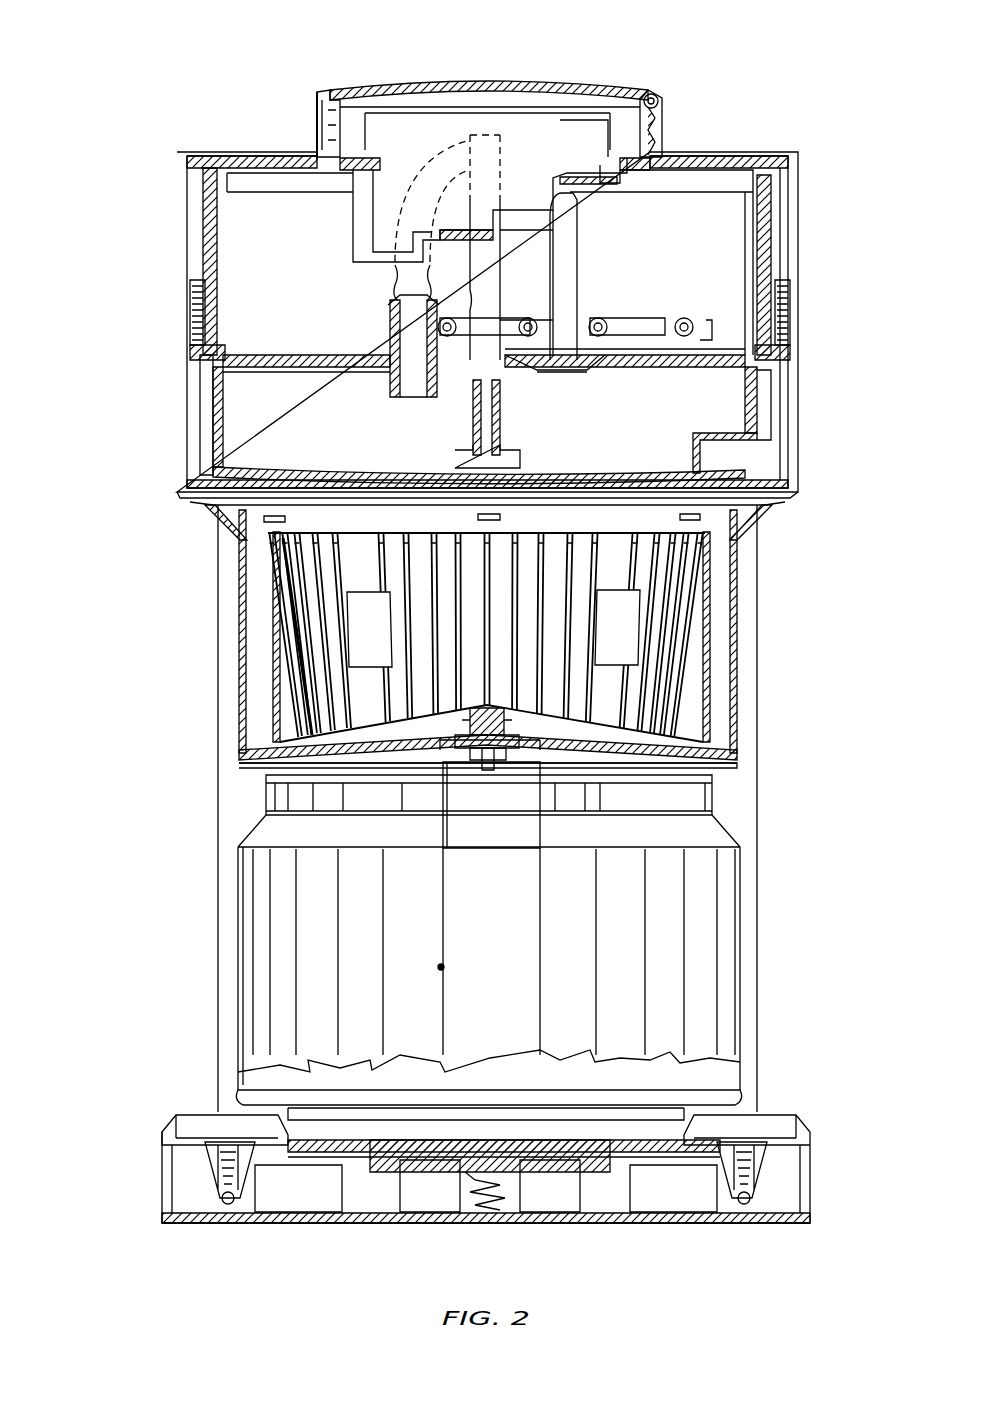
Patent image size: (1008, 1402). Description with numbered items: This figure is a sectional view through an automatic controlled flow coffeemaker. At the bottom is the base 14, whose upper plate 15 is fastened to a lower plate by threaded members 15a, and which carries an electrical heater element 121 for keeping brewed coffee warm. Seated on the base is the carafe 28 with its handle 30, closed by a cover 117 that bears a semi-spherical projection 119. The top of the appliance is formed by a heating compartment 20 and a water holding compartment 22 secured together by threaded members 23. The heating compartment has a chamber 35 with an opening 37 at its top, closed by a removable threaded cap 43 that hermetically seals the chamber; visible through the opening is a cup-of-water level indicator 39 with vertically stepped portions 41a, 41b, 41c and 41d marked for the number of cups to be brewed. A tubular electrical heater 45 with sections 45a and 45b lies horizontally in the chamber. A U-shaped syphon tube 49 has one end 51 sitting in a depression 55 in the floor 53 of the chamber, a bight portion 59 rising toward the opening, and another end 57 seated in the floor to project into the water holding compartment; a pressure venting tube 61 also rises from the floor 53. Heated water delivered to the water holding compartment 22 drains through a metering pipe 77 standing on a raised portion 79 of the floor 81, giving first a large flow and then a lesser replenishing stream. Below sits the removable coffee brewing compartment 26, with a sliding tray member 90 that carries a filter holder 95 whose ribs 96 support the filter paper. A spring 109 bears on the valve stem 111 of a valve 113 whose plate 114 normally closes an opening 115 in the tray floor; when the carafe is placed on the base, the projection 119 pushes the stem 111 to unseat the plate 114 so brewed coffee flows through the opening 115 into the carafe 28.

The base 14 is at (118, 1238).
The upper plate 15 is at (205, 1115).
The threaded members 15a is at (228, 1196).
The heating compartment 20 is at (705, 160).
The water holding compartment 22 is at (212, 444).
The threaded members 23 is at (192, 306).
The coffee brewing compartment 26 is at (748, 623).
The carafe 28 is at (641, 956).
The handle 30 is at (467, 953).
The chamber 35 is at (292, 261).
The opening 37 is at (655, 95).
The cup-of-water level indicator 39 is at (597, 130).
The stepped portion 41a is at (577, 210).
The stepped portion 41b is at (512, 228).
The stepped portion 41c is at (452, 236).
The stepped portion 41d is at (358, 263).
The removable threaded cap 43 is at (360, 88).
The tubular electrical heater 45 is at (622, 280).
The heater section 45a is at (664, 319).
The heater section 45b is at (512, 325).
The U-shaped syphon tube 49 is at (572, 229).
The tube end 51 is at (588, 372).
The floor 53 is at (285, 365).
The depression 55 is at (548, 375).
The tube end 57 is at (390, 391).
The bight portion 59 is at (423, 160).
The pressure venting tube 61 is at (498, 289).
The metering pipe 77 is at (472, 411).
The raised portion 79 is at (540, 468).
The floor 81 is at (645, 466).
The tray member 90 is at (195, 505).
The filter holder 95 is at (712, 579).
The ribs 96 is at (478, 565).
The spring 109 is at (505, 705).
The valve stem 111 is at (498, 752).
The valve 113 is at (445, 720).
The plate 114 is at (465, 752).
The opening 115 is at (480, 752).
The cover 117 is at (713, 795).
The semi-spherical projection 119 is at (535, 760).
The electrical heater element 121 is at (552, 1187).